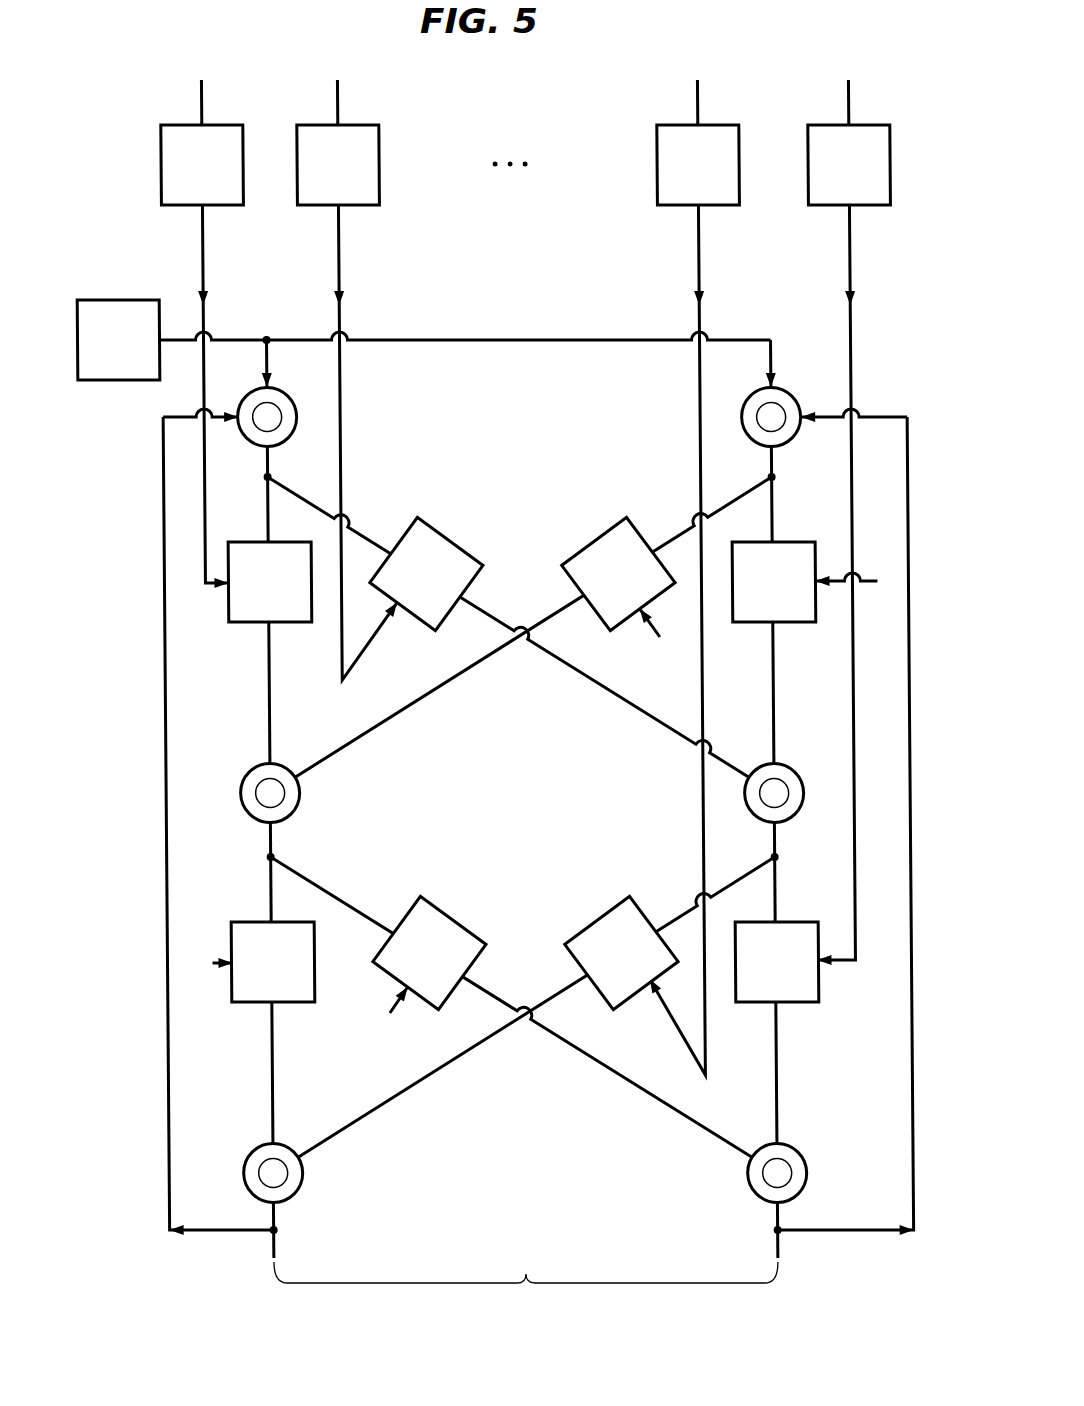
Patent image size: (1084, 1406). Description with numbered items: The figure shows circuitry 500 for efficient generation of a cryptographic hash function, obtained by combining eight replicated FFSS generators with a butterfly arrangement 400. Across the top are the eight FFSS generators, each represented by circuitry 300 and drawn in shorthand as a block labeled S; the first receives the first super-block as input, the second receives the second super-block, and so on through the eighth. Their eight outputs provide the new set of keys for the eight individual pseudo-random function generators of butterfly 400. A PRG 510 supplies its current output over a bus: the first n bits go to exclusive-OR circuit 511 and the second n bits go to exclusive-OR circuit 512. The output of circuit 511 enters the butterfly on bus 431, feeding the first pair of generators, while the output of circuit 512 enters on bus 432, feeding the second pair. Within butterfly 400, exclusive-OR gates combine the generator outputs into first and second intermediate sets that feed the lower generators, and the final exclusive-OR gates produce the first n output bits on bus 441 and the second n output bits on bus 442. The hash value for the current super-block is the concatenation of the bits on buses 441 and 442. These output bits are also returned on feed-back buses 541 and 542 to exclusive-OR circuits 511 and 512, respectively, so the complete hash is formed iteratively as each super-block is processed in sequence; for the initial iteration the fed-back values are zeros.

The FFSS generator circuitry 300 is at (163, 170).
The cryptographic hash function circuitry 500 is at (612, 72).
The PRG 510 is at (101, 300).
The exclusive-OR circuit 511 is at (288, 396).
The exclusive-OR circuit 512 is at (791, 394).
The butterfly circuitry 400 is at (528, 440).
The bus 431 is at (265, 479).
The bus 432 is at (773, 462).
The bus 441 is at (268, 1245).
The bus 442 is at (771, 1247).
The feed-back bus 541 is at (163, 1115).
The feed-back bus 542 is at (907, 1110).